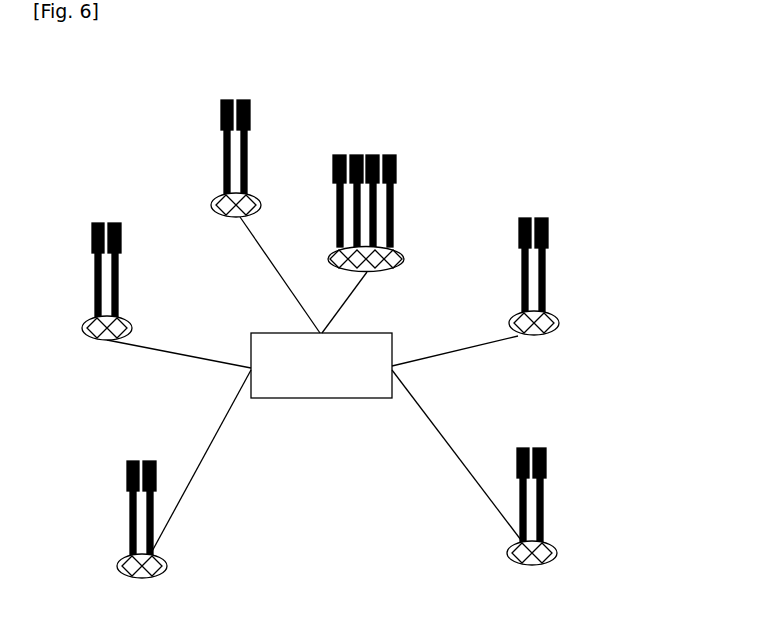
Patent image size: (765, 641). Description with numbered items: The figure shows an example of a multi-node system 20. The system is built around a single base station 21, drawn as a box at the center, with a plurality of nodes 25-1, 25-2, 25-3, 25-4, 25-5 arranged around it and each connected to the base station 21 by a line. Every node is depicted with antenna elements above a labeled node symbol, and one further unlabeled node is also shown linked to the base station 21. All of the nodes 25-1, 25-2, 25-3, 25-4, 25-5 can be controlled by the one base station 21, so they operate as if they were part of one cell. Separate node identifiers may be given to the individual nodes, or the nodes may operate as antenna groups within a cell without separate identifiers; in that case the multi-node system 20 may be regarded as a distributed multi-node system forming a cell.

The multi-node system 20 is at (455, 102).
The base station 21 is at (366, 398).
The node 25-1 is at (111, 223).
The node 25-2 is at (241, 100).
The node 25-3 is at (540, 218).
The node 25-4 is at (546, 495).
The node 25-5 is at (128, 505).